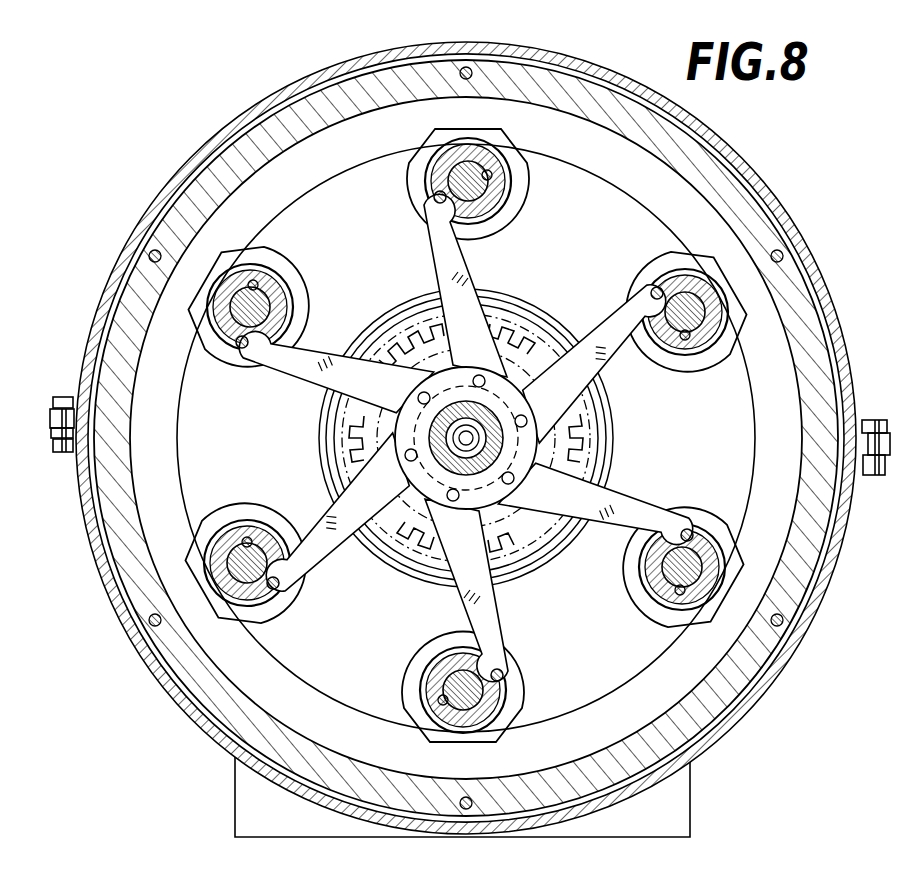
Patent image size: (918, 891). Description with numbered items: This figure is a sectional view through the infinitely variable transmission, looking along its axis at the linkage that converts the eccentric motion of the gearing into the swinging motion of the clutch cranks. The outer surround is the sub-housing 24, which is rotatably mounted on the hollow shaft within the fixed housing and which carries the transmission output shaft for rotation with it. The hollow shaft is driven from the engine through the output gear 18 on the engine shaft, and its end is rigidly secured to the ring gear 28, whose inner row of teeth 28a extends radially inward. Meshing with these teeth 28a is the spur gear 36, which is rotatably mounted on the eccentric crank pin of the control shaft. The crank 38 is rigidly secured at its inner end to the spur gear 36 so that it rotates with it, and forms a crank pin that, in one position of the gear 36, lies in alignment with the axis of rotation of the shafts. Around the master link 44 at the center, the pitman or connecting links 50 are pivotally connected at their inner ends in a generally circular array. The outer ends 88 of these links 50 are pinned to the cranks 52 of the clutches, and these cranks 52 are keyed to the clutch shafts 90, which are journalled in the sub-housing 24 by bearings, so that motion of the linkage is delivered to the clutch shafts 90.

The output gear 18 is at (441, 47).
The sub-housing 24 is at (288, 757).
The ring gear 28 is at (340, 460).
The inner row of teeth 28a is at (340, 427).
The spur gear 36 is at (418, 300).
The crank 38 is at (452, 470).
The master link 44 is at (390, 438).
The connecting links 50 is at (668, 464).
The cranks 52 is at (428, 200).
The outer ends 88 is at (495, 198).
The clutch shafts 90 is at (480, 240).